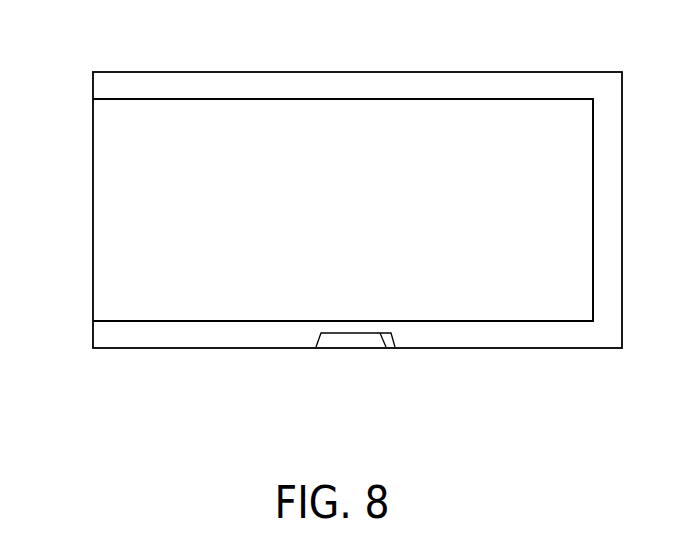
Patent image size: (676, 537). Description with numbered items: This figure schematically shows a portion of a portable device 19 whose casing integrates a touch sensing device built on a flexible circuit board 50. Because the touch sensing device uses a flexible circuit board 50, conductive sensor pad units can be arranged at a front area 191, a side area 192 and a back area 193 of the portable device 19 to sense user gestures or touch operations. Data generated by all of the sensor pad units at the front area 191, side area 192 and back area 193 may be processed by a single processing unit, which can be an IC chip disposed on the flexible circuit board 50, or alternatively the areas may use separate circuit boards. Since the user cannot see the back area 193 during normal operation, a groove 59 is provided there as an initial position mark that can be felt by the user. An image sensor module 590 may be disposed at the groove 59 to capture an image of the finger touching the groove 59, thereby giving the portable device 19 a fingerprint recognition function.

The flexible circuit board 50 is at (166, 88).
The portable device 19 is at (118, 190).
The front area 191 is at (372, 100).
The side area 192 is at (592, 193).
The back area 193 is at (410, 320).
The groove 59 is at (330, 348).
The image sensor module 590 is at (383, 348).